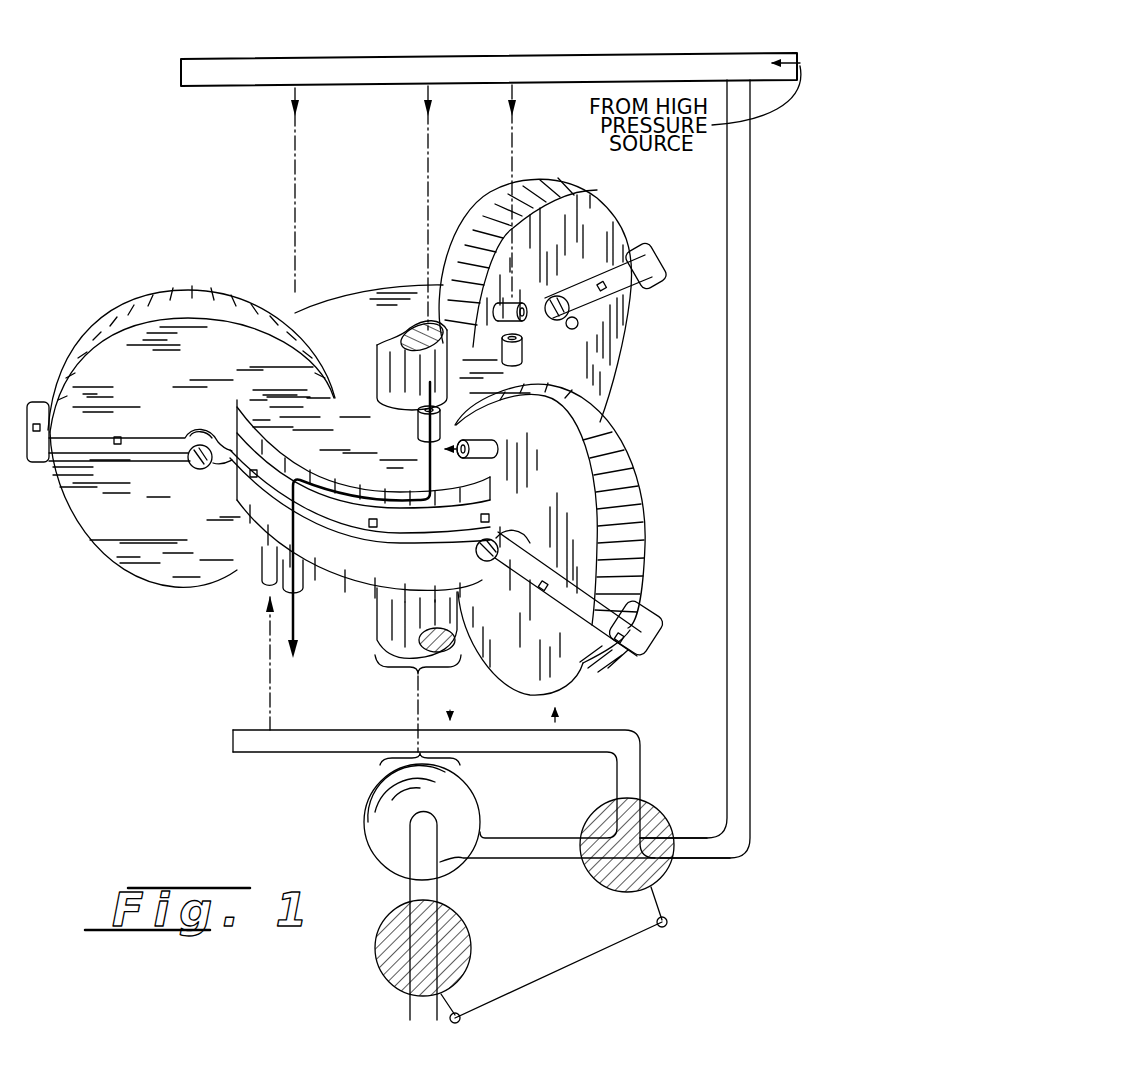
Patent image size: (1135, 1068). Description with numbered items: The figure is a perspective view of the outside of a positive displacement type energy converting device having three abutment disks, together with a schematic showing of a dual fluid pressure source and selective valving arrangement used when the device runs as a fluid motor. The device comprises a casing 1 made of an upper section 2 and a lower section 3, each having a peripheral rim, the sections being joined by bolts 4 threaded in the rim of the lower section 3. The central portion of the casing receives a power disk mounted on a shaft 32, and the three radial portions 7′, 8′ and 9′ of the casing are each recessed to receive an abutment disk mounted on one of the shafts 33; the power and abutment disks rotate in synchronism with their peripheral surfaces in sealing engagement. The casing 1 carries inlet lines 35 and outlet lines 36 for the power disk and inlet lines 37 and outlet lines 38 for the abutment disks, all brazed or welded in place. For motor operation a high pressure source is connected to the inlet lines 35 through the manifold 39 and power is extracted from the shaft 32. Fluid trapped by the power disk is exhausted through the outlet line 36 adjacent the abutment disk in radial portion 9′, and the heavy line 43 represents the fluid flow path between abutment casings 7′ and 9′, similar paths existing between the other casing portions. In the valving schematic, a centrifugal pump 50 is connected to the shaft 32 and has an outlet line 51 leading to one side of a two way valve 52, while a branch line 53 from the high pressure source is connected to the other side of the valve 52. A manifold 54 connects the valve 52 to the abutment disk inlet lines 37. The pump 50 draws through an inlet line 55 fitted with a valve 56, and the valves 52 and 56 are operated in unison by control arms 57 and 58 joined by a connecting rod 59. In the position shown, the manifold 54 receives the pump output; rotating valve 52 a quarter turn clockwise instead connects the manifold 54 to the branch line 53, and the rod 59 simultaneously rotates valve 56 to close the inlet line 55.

The casing 1 is at (400, 285).
The upper section 2 is at (362, 297).
The lower section 3 is at (383, 594).
The bolts 4 is at (250, 473).
The radial portion 7′ is at (640, 510).
The radial portion 8′ is at (655, 179).
The radial portion 9′ is at (140, 298).
The shaft 32 is at (388, 342).
The shafts 33 is at (498, 568).
The inlet lines 35 is at (416, 430).
The outlet lines 36 is at (298, 580).
The inlet lines 37 is at (272, 568).
The outlet lines 38 is at (475, 442).
The manifold 39 is at (540, 53).
The fluid flow path 43 is at (430, 452).
The centrifugal pump 50 is at (384, 800).
The outlet line 51 is at (497, 838).
The two way valve 52 is at (664, 875).
The branch line 53 is at (750, 770).
The manifold 54 is at (303, 730).
The inlet line 55 is at (410, 893).
The valve 56 is at (380, 950).
The control arm 57 is at (655, 912).
The control arm 58 is at (455, 1003).
The connecting rod 59 is at (583, 962).